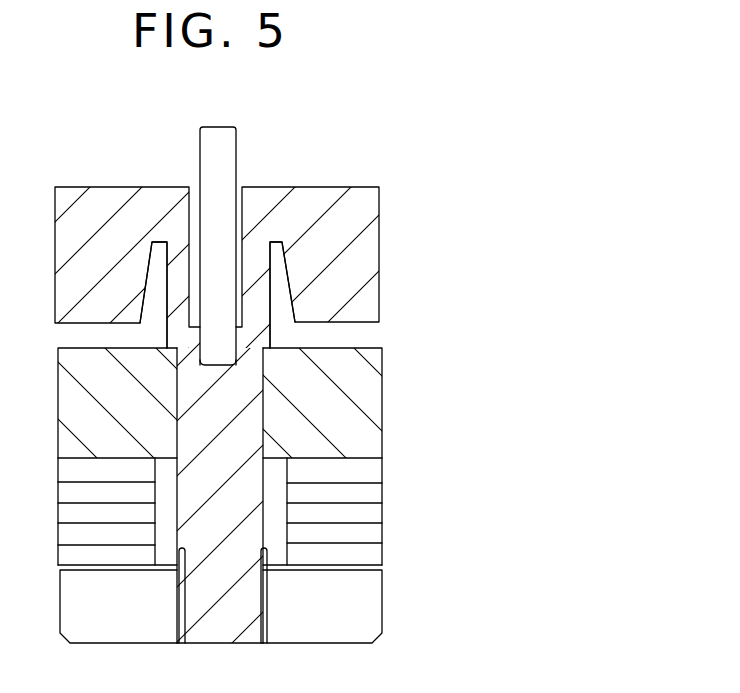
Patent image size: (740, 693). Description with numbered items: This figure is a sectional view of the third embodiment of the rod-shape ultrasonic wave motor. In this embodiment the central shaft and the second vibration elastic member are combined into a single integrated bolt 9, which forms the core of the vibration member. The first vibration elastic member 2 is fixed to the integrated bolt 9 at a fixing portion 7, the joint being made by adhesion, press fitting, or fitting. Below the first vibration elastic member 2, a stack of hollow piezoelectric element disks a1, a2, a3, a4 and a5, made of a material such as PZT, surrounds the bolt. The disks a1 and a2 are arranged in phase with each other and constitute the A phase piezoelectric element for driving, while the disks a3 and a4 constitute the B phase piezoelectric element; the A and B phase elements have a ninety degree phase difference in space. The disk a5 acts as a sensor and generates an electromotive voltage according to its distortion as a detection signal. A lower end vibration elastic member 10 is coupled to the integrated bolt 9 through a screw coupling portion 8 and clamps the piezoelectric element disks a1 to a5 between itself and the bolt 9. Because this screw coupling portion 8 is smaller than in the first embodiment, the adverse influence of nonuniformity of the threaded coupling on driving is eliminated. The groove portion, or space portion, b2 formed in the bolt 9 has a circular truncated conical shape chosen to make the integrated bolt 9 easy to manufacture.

The integrated bolt 9 is at (363, 243).
The groove portion b2 is at (283, 277).
The fixing portion 7 is at (266, 408).
The first vibration elastic member 2 is at (347, 420).
The piezoelectric element disk a1 is at (378, 473).
The piezoelectric element disk a2 is at (373, 495).
The piezoelectric element disk a3 is at (375, 513).
The piezoelectric element disk a4 is at (375, 533).
The piezoelectric element disk a5 is at (377, 552).
The lower end vibration elastic member 10 is at (373, 615).
The screw coupling portion 8 is at (268, 614).